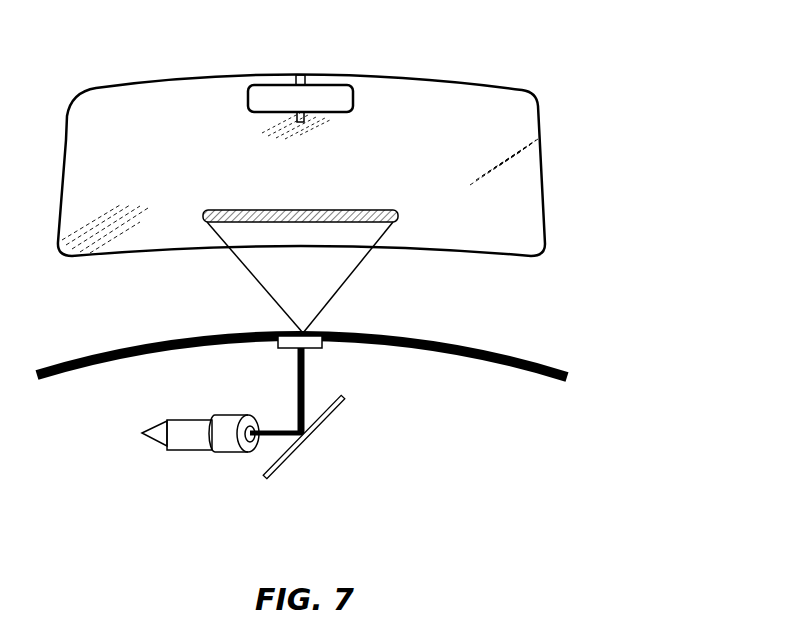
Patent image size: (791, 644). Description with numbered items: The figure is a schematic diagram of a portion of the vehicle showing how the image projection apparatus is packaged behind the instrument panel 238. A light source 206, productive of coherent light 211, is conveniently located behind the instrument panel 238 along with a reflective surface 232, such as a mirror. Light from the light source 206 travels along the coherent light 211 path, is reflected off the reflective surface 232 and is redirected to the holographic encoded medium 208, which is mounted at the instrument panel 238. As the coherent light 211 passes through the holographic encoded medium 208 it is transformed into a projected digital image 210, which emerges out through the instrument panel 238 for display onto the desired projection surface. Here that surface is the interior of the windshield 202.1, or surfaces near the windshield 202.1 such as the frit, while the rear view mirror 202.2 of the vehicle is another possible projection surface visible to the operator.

The windshield 202.1 is at (505, 138).
The rear view mirror 202.2 is at (323, 98).
The projected digital image 210 is at (412, 217).
The holographic encoded medium 208 is at (320, 327).
The instrument panel 238 is at (512, 340).
The coherent light 211 is at (273, 420).
The light source 206 is at (196, 458).
The reflective surface 232 is at (297, 461).